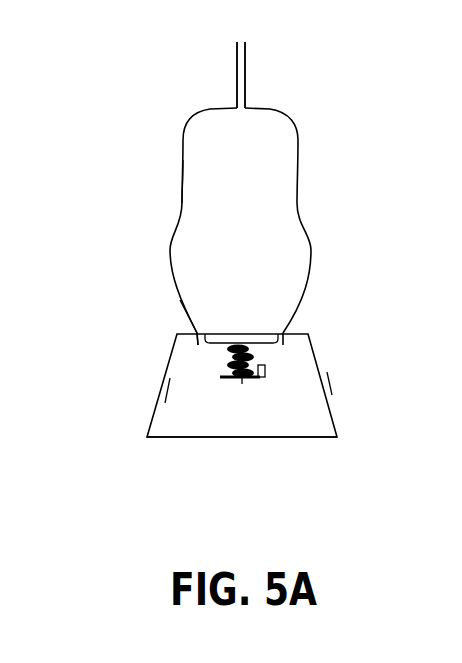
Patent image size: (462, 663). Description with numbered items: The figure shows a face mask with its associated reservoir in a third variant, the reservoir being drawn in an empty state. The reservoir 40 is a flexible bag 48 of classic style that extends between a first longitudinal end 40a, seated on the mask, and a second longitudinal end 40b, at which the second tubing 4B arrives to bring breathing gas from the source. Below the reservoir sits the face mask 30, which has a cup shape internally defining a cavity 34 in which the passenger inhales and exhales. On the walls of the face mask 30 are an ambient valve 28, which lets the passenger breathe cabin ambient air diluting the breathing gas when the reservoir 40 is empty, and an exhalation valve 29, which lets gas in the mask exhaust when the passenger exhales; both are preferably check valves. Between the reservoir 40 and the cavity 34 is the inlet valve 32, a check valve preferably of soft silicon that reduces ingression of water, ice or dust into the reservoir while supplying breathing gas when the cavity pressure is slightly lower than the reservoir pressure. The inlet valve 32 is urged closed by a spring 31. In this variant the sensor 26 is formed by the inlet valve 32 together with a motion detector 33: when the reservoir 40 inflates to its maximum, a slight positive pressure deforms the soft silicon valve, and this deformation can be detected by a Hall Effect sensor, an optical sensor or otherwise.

The second tubing 4B is at (243, 68).
The sensor 26 is at (236, 445).
The ambient valve 28 is at (162, 386).
The exhalation valve 29 is at (313, 388).
The face mask 30 is at (325, 445).
The spring 31 is at (233, 352).
The inlet valve 32 is at (215, 345).
The motion detector 33 is at (266, 378).
The cavity 34 is at (193, 420).
The reservoir 40 is at (313, 213).
The first longitudinal end 40a is at (190, 327).
The second longitudinal end 40b is at (228, 102).
The flexible bag 48 is at (182, 210).